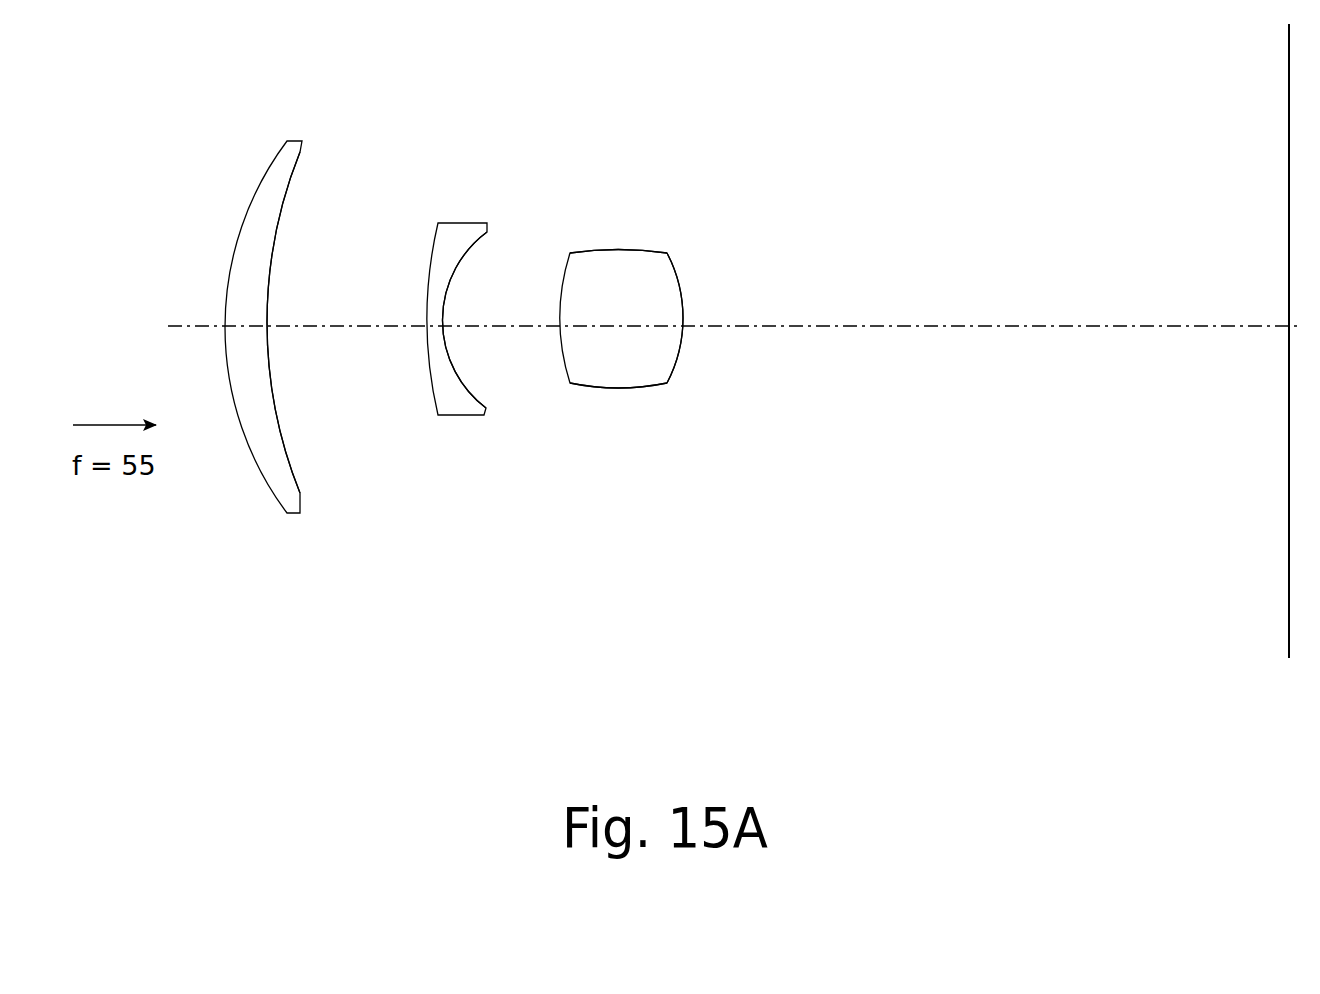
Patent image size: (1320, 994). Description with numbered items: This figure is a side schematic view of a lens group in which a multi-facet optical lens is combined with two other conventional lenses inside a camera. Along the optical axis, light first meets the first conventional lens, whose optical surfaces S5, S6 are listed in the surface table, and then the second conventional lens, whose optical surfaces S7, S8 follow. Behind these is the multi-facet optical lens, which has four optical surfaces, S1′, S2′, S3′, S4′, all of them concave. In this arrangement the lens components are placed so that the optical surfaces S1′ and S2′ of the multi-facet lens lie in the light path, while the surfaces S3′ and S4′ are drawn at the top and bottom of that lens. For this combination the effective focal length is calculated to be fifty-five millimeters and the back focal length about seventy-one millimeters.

The optical surface S5 is at (232, 265).
The optical surface S6 is at (274, 428).
The optical surface S7 is at (433, 258).
The optical surface S8 is at (448, 352).
The optical surface S1′ is at (560, 298).
The optical surface S2′ is at (683, 268).
The optical surface S3′ is at (637, 391).
The optical surface S4′ is at (614, 250).